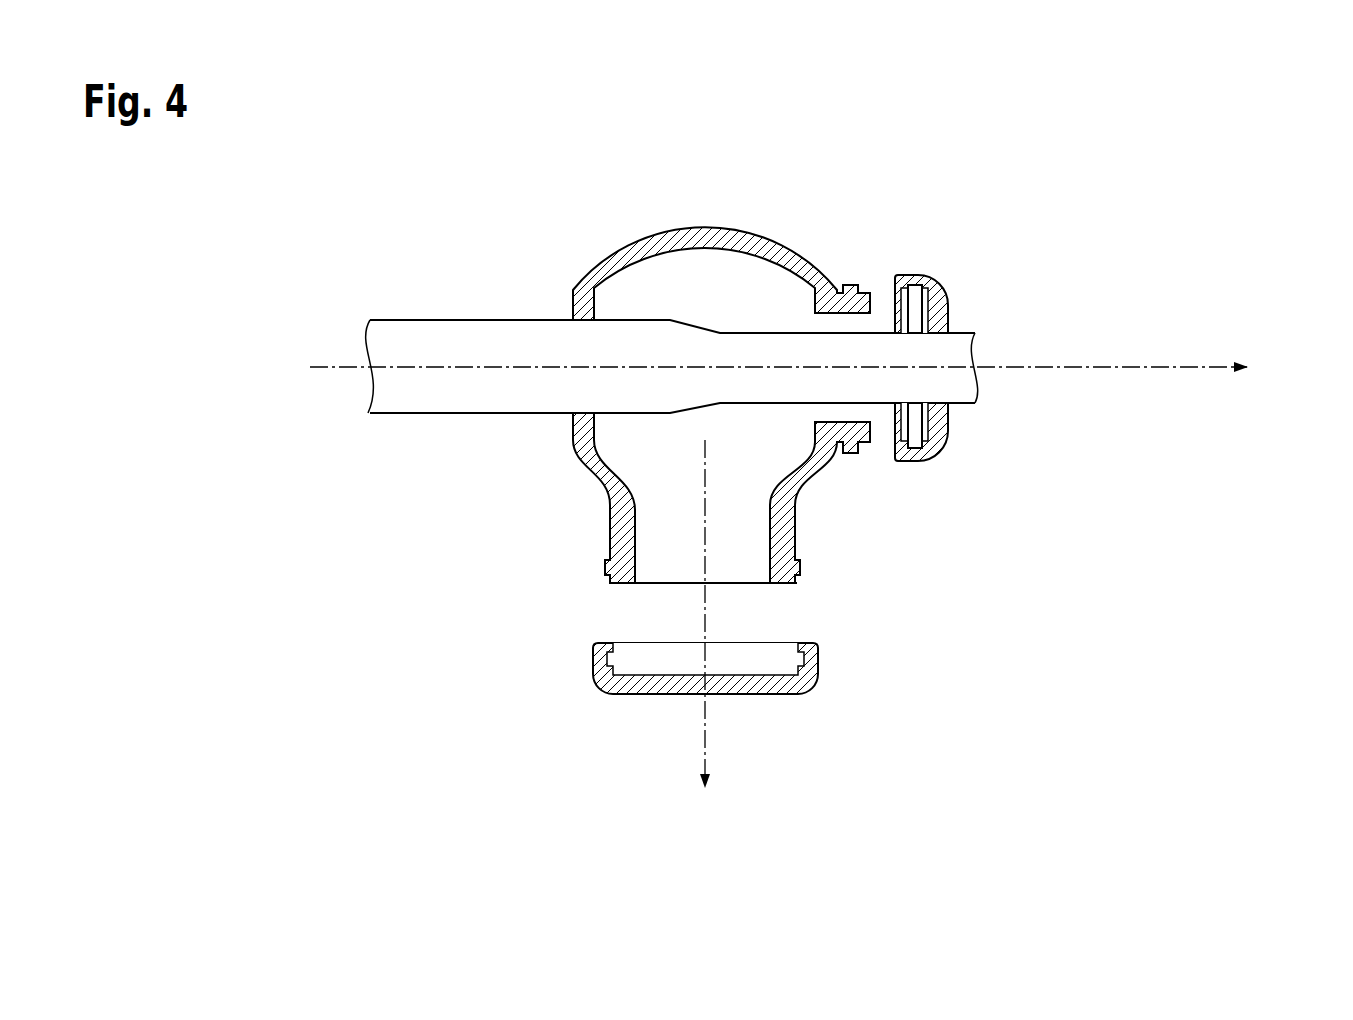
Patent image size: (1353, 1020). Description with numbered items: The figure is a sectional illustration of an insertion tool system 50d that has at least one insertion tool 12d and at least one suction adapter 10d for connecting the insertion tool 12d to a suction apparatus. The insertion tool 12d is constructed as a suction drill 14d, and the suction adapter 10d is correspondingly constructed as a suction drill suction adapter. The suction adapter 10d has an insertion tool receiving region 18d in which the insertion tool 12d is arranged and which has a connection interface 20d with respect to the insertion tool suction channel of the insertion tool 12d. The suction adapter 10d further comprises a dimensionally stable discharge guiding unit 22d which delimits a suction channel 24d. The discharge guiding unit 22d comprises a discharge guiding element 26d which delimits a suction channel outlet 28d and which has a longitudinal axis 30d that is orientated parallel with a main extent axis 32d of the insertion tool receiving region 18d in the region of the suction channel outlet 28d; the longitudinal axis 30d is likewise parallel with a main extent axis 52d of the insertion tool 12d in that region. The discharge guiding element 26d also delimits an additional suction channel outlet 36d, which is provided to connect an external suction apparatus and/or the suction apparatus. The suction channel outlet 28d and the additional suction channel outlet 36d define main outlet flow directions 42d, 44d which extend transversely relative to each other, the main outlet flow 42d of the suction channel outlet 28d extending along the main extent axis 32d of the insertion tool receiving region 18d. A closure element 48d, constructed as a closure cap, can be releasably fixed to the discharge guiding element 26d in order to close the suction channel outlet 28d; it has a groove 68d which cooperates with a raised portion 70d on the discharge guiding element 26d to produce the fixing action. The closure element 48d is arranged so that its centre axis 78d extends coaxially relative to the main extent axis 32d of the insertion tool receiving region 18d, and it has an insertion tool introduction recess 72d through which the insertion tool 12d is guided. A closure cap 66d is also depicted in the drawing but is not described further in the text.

The suction adapter 10d is at (500, 525).
The insertion tool 12d is at (672, 321).
The suction drill 14d is at (440, 332).
The insertion tool receiving region 18d is at (721, 244).
The connection interface 20d is at (676, 285).
The discharge guiding unit 22d is at (903, 588).
The suction channel 24d is at (738, 460).
The discharge guiding element 26d is at (796, 472).
The suction channel outlet 28d is at (860, 325).
The longitudinal axis 30d is at (815, 419).
The main extent axis 32d is at (815, 419).
The additional suction channel outlet 36d is at (670, 580).
The main outlet flow direction 42d is at (815, 419).
The main outlet flow direction 44d is at (712, 724).
The closure element 48d is at (984, 368).
The insertion tool system 50d is at (443, 642).
The main extent axis 52d is at (815, 419).
The cap 66d is at (632, 696).
The groove 68d is at (913, 285).
The raised portion 70d is at (855, 287).
The insertion tool introduction recess 72d is at (948, 290).
The centre axis 78d is at (1182, 372).